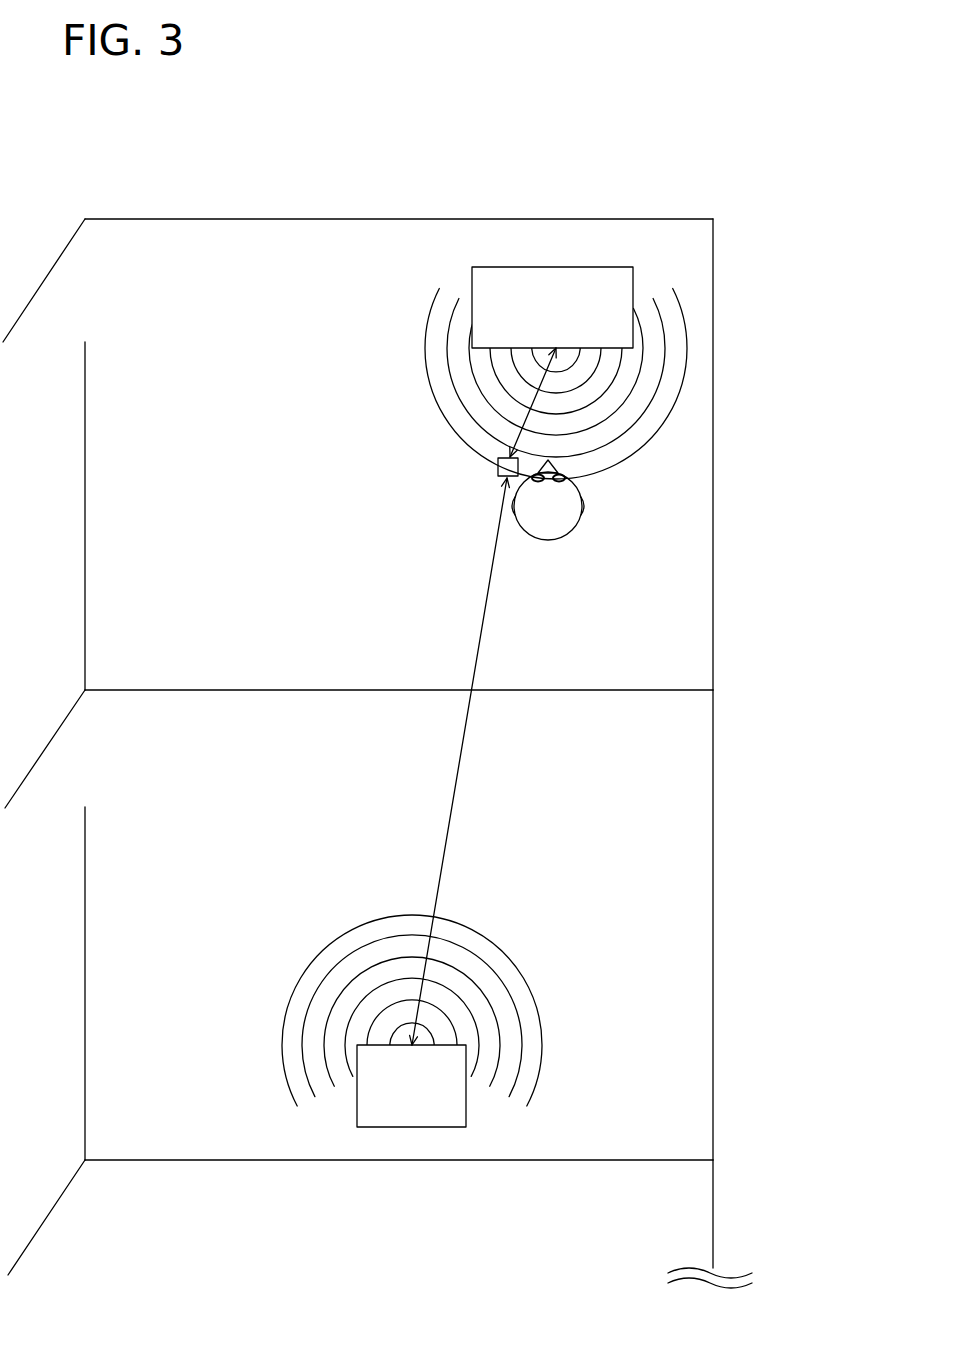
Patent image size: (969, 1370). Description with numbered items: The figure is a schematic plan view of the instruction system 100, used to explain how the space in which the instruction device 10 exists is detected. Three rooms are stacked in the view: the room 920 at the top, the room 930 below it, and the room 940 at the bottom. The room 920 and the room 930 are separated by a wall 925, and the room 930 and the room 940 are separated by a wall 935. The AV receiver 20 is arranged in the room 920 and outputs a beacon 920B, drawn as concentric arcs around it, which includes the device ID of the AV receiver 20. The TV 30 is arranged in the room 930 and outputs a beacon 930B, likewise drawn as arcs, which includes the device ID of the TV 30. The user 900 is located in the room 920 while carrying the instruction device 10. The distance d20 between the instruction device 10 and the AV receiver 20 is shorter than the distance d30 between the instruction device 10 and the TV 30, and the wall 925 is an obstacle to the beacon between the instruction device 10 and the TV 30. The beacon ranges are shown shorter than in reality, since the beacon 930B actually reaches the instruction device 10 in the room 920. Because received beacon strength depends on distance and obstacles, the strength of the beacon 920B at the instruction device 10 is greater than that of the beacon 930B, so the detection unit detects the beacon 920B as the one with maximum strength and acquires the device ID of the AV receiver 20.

The instruction system 100 is at (738, 80).
The AV receiver 20 is at (634, 275).
The instruction device 10 is at (498, 470).
The television 30 is at (468, 1043).
The user 900 is at (568, 513).
The room 920 is at (713, 395).
The beacon 920B is at (655, 436).
The wall 925 is at (565, 690).
The room 930 is at (713, 915).
The beacon 930B is at (342, 934).
The wall 935 is at (543, 1160).
The room 940 is at (712, 1230).
The distance d20 is at (514, 424).
The distance d30 is at (478, 652).